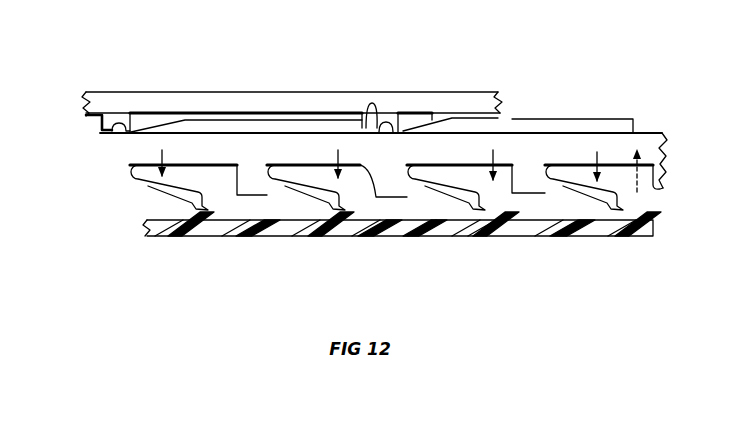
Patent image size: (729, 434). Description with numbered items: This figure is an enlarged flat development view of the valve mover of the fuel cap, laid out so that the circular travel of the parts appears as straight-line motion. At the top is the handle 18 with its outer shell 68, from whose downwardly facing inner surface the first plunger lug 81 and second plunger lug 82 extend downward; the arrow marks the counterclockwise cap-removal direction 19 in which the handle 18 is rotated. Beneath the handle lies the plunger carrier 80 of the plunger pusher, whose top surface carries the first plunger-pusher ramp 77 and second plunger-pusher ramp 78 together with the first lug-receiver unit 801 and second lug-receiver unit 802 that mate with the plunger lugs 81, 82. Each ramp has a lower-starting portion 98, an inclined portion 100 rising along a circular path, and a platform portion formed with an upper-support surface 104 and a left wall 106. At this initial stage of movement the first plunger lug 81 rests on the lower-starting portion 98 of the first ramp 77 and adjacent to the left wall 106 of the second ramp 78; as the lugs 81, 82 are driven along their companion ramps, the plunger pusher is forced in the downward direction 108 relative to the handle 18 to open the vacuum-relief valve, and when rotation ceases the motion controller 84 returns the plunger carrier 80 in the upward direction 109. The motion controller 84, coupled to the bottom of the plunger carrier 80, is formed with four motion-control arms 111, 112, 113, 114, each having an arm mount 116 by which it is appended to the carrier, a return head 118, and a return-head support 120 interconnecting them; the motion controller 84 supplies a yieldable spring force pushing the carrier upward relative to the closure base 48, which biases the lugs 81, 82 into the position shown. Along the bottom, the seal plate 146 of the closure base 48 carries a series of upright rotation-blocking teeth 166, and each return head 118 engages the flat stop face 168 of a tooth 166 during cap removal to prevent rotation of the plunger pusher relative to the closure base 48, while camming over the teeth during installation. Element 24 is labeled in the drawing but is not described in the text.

The handle 18 is at (88, 82).
The first plunger lug 81 is at (112, 120).
The outer shell 68 is at (143, 100).
The inclined portion 100 is at (156, 123).
The first plunger-pusher ramp 77 is at (228, 107).
The counterclockwise cap-removal direction 19 is at (396, 63).
The second lug-receiver unit 802 is at (289, 130).
The left wall 106 is at (371, 115).
The second plunger lug 82 is at (381, 127).
The upper-support surface 104 is at (507, 120).
The first lug-receiver unit 801 is at (520, 127).
The second plunger-pusher ramp 78 is at (534, 116).
The downward direction 108 is at (597, 155).
The second circuit board 24 is at (673, 149).
The upward direction 109 is at (637, 192).
The return head 118 is at (633, 209).
The motion controller 84 is at (648, 217).
The rotation-blocking tooth 166 is at (617, 217).
The motion-control arm 114 is at (594, 215).
The return-head support 120 is at (592, 213).
The arm mount 116 is at (552, 185).
The motion-control arm 111 is at (118, 205).
The lower-starting portion 98 is at (118, 131).
The closure base 48 is at (148, 230).
The seal plate 146 is at (142, 230).
The motion-control arm 112 is at (280, 208).
The motion-control arm 113 is at (441, 211).
The flat stop face 168 is at (312, 166).
The plunger carrier 80 is at (188, 157).